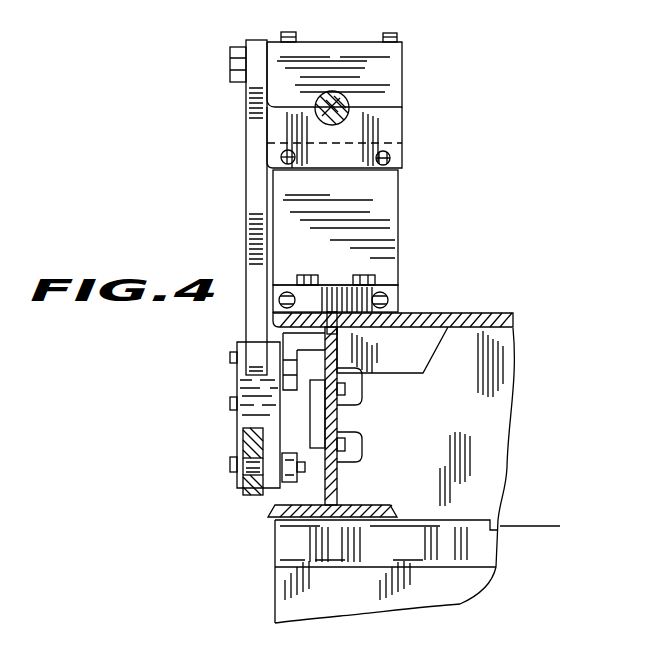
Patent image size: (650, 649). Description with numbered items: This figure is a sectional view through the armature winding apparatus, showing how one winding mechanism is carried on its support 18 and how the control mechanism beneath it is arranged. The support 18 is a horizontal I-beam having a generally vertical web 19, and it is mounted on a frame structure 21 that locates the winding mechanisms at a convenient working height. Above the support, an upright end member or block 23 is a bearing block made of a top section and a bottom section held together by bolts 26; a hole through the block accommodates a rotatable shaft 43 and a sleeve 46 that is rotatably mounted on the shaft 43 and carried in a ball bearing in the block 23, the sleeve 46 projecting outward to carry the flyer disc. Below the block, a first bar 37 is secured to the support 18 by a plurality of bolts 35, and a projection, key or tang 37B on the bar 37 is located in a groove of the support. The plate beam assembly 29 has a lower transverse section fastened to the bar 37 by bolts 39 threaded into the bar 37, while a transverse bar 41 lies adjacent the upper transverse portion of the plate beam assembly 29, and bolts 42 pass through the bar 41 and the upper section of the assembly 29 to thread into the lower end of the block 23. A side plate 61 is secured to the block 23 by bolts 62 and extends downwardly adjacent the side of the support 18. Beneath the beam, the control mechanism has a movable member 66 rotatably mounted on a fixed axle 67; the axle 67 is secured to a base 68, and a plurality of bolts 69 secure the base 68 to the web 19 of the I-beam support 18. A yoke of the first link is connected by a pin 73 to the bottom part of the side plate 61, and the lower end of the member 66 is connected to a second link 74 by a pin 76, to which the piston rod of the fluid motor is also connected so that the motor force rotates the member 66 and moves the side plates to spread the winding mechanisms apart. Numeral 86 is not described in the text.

The support 18 is at (372, 338).
The web 19 is at (337, 494).
The frame structure 21 is at (290, 540).
The block 23 is at (390, 80).
The bolts 26 is at (388, 33).
The plate beam assembly 29 is at (383, 205).
The bolts 35 is at (315, 275).
The bar 37 is at (331, 287).
The tang 37B is at (329, 328).
The bolts 39 is at (282, 292).
The transverse bar 41 is at (360, 168).
The bolts 42 is at (281, 152).
The shaft 43 is at (322, 104).
The sleeve 46 is at (343, 94).
The plate 61 is at (247, 212).
The bolts 62 is at (231, 64).
The movable member 66 is at (255, 415).
The axle 67 is at (231, 403).
The base 68 is at (318, 420).
The bolts 69 is at (343, 446).
The pin 73 is at (231, 358).
The second link 74 is at (243, 490).
The pin 76 is at (231, 465).
The retainer nut 86 is at (283, 487).